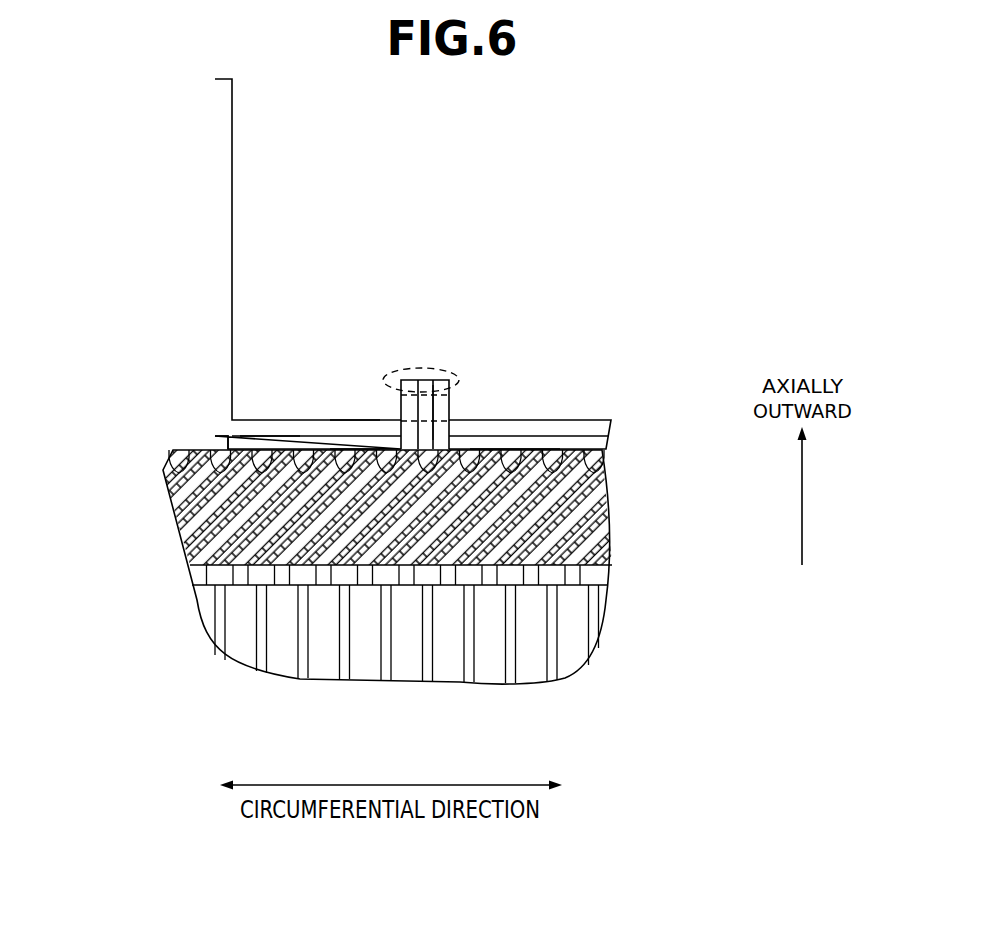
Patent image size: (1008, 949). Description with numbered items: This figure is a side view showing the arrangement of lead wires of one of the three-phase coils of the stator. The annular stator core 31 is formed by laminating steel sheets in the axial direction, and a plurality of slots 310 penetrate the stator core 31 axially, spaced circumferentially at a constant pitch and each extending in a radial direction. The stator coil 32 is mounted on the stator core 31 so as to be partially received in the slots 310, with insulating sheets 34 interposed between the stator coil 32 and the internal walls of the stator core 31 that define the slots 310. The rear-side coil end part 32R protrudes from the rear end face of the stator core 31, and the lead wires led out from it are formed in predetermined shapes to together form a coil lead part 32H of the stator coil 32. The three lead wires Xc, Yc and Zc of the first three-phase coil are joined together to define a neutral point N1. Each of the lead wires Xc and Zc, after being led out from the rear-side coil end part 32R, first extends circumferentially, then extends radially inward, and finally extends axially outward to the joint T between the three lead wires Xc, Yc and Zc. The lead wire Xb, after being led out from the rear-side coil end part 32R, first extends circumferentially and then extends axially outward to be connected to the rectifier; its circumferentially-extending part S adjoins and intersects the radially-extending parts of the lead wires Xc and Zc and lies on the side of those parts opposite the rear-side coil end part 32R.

The stator core 31 is at (568, 672).
The slots 310 is at (590, 630).
The insulating sheets 34 is at (590, 577).
The stator coil 32 is at (409, 264).
The coil lead part 32H is at (522, 338).
The rear-side coil end part 32R is at (192, 440).
The joint T is at (407, 399).
The neutral point N1 is at (418, 367).
The lead wire Yc is at (430, 374).
The lead wire Xb is at (253, 430).
The circumferentially-extending part S is at (350, 428).
The lead wire Zc is at (350, 447).
The lead wire Xc is at (492, 447).